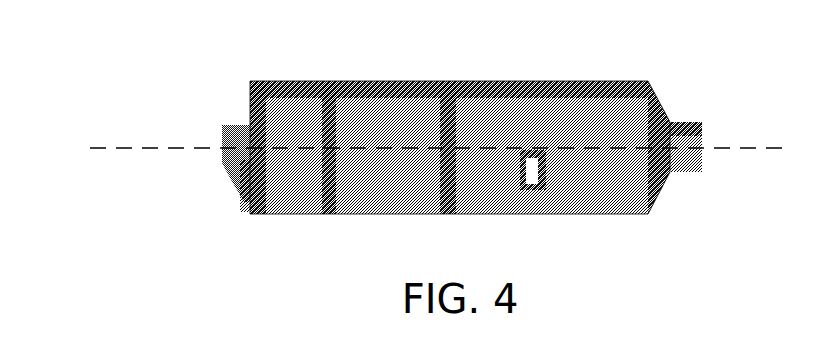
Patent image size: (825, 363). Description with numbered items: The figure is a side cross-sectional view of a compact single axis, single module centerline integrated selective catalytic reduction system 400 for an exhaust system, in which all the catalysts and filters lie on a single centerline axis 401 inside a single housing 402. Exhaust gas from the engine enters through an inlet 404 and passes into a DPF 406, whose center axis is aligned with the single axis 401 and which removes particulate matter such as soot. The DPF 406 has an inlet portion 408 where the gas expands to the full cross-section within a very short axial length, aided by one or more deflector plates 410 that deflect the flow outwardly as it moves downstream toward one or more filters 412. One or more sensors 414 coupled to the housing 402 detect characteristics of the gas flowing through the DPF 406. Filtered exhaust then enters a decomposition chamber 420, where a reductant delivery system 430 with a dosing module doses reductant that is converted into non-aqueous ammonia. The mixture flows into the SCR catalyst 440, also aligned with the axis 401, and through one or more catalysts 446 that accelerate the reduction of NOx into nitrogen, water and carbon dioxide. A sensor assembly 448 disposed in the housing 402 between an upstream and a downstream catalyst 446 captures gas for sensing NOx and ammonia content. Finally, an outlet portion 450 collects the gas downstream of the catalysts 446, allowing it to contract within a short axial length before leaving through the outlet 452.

The single axis centerline integrated selective catalytic reduction system 400 is at (708, 82).
The single centerline axis 401 is at (125, 148).
The single housing 402 is at (407, 79).
The inlet 404 is at (227, 124).
The DPF 406 is at (356, 79).
The inlet portion 408 is at (248, 210).
The deflector plates 410 is at (248, 184).
The filters 412 is at (297, 208).
The sensors 414 is at (249, 100).
The decomposition chamber 420 is at (450, 206).
The reductant delivery system 430 is at (451, 79).
The SCR catalyst 440 is at (538, 79).
The catalysts 446 is at (605, 90).
The sensor assembly 448 is at (527, 190).
The outlet portion 450 is at (656, 196).
The outlet 452 is at (703, 130).